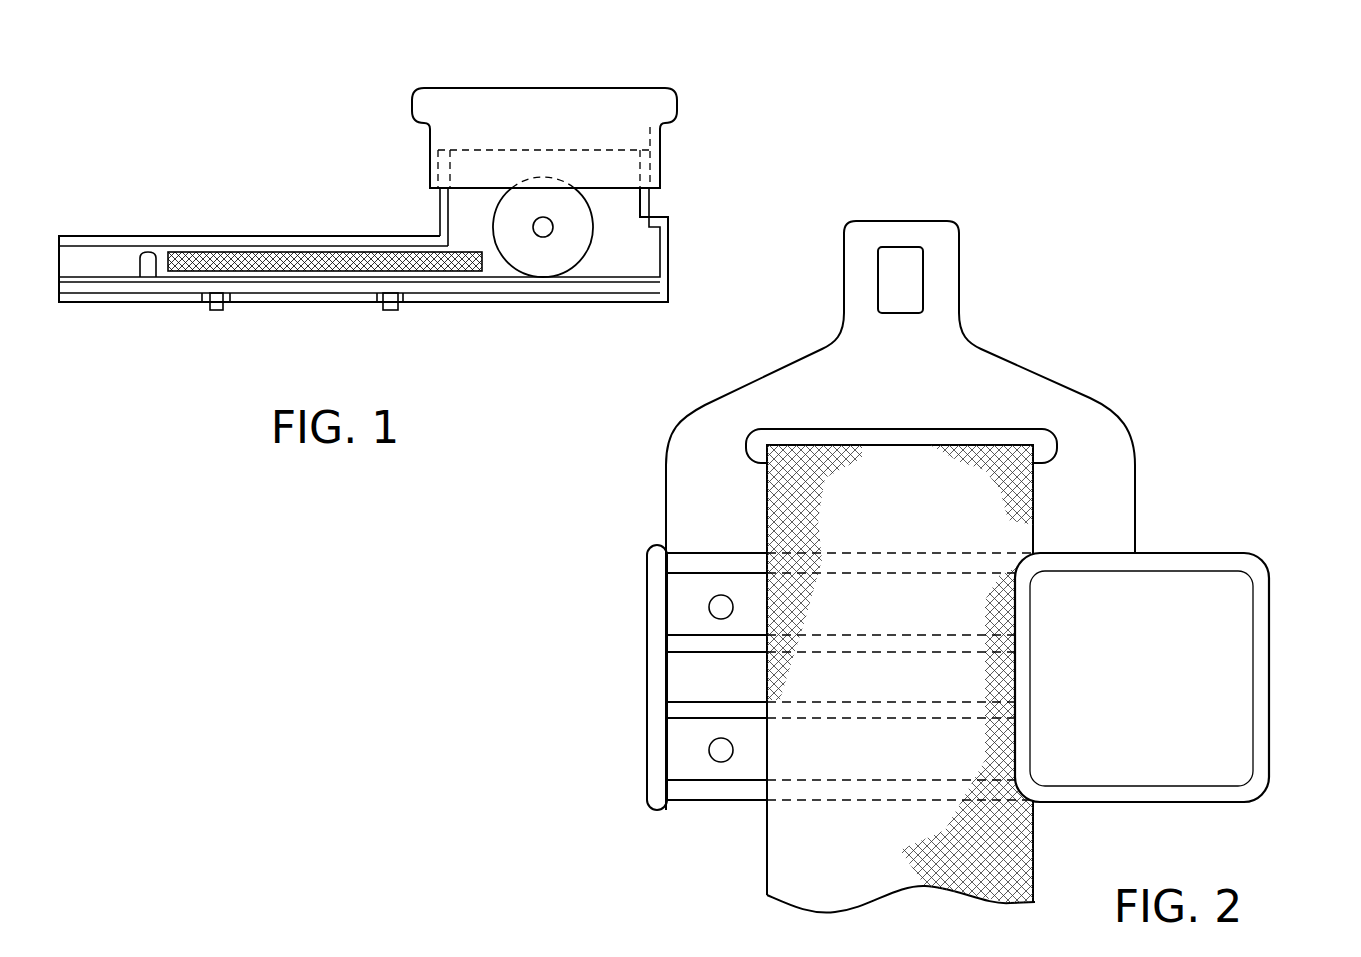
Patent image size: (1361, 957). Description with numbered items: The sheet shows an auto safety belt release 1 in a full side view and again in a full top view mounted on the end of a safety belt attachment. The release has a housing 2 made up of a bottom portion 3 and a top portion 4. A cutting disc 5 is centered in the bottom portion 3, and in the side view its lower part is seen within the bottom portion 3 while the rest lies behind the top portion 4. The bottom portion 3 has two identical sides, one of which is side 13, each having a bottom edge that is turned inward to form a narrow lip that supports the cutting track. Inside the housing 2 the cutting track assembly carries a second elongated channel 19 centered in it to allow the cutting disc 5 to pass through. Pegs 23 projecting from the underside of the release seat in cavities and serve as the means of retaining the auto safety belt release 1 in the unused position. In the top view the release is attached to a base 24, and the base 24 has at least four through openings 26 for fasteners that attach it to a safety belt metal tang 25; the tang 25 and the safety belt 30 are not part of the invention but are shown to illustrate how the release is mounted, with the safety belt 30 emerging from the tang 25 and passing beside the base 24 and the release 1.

In FIG. 1, the auto safety belt release 1 is at (598, 72).
In FIG. 2, the auto safety belt release 1 is at (1227, 610).
In FIG. 1, the housing 2 is at (418, 169).
In FIG. 1, the bottom portion 3 is at (606, 227).
In FIG. 1, the top portion 4 is at (549, 131).
In FIG. 1, the cutting disc 5 is at (507, 227).
In FIG. 1, the side 13 is at (465, 235).
In FIG. 2, the second elongated channel 19 is at (717, 667).
In FIG. 1, the pegs 23 is at (215, 312).
In FIG. 2, the base 24 is at (708, 552).
In FIG. 2, the safety belt metal tang 25 is at (889, 390).
In FIG. 2, the through openings 26 is at (720, 607).
In FIG. 1, the safety belt 30 is at (209, 256).
In FIG. 2, the safety belt 30 is at (1020, 498).